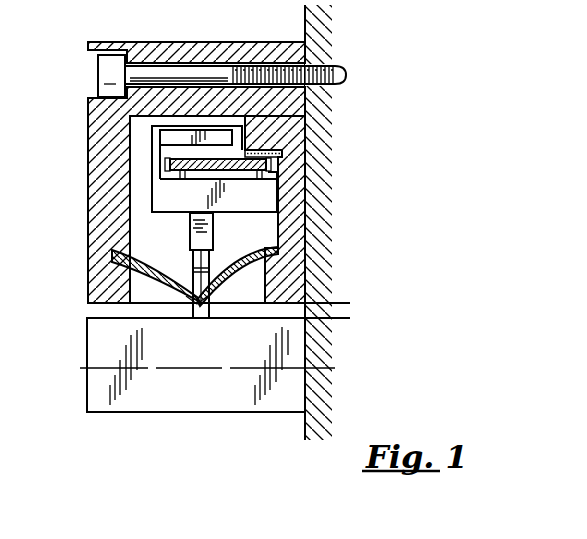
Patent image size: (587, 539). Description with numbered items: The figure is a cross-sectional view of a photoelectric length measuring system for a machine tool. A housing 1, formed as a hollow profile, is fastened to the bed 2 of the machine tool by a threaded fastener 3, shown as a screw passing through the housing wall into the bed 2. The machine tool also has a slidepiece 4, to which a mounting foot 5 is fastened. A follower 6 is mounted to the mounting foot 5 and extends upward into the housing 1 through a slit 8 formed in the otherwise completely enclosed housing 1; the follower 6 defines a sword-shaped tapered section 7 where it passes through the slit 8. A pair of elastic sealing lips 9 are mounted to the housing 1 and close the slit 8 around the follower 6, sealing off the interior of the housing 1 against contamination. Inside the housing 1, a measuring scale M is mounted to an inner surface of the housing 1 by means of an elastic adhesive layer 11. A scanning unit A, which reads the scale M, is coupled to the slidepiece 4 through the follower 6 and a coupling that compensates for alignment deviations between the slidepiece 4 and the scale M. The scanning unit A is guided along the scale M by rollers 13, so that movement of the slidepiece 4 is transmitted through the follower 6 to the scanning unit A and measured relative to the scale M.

The housing 1 is at (288, 103).
The bed 2 is at (310, 33).
The threaded fastener 3 is at (102, 73).
The slidepiece 4 is at (312, 392).
The mounting foot 5 is at (98, 346).
The follower 6 is at (209, 243).
The sword-shaped tapered section 7 is at (197, 306).
The slit 8 is at (158, 300).
The elastic sealing lips 9 is at (112, 256).
The elastic adhesive layer 11 is at (276, 151).
The rollers 13 is at (166, 162).
The measuring scale M is at (271, 164).
The scanning unit A is at (276, 198).